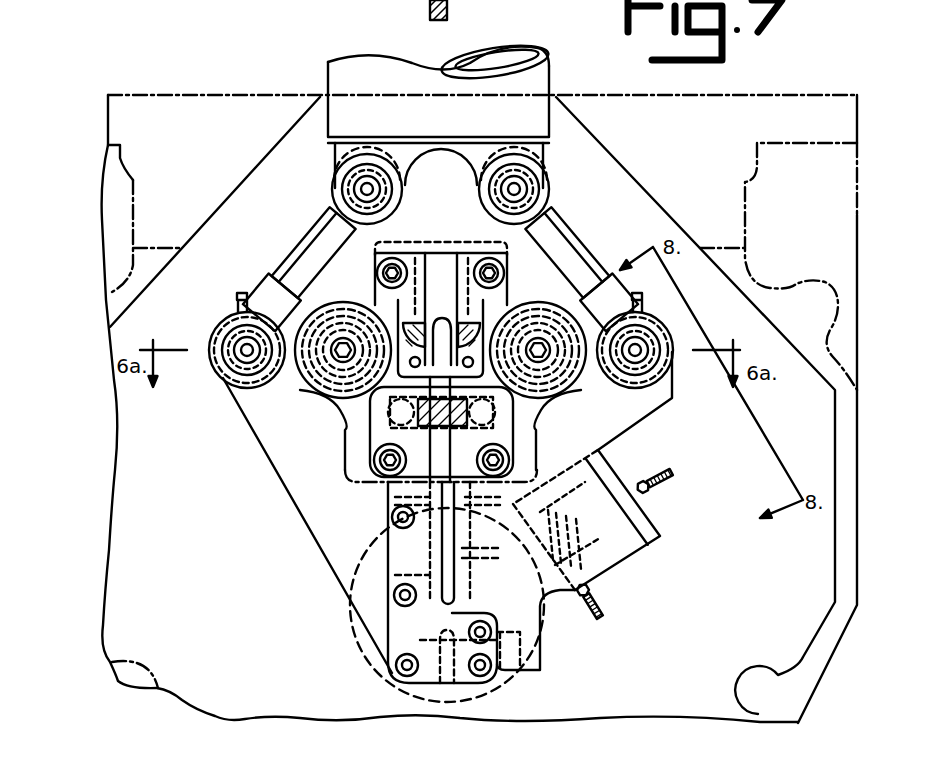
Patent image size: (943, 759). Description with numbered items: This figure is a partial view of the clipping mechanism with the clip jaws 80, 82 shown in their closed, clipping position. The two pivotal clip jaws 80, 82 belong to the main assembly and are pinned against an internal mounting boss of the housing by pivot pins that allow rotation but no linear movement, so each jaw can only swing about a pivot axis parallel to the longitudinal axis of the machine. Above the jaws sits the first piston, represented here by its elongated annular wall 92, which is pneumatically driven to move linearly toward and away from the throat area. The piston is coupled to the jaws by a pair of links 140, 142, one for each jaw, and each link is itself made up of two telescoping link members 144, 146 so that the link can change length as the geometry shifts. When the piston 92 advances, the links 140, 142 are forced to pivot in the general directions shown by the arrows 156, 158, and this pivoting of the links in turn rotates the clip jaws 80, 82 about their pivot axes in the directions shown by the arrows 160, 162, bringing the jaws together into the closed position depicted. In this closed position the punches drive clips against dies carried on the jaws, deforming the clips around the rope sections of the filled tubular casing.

The clip jaw 80 is at (327, 568).
The clip jaw 82 is at (667, 404).
The annular wall 92 is at (490, 93).
The link 140 is at (308, 222).
The link 142 is at (592, 226).
The telescoping link member 144 is at (600, 258).
The telescoping link member 146 is at (660, 305).
The arrow 156 is at (343, 213).
The arrow 158 is at (541, 214).
The arrow 160 is at (300, 525).
The arrow 162 is at (634, 533).